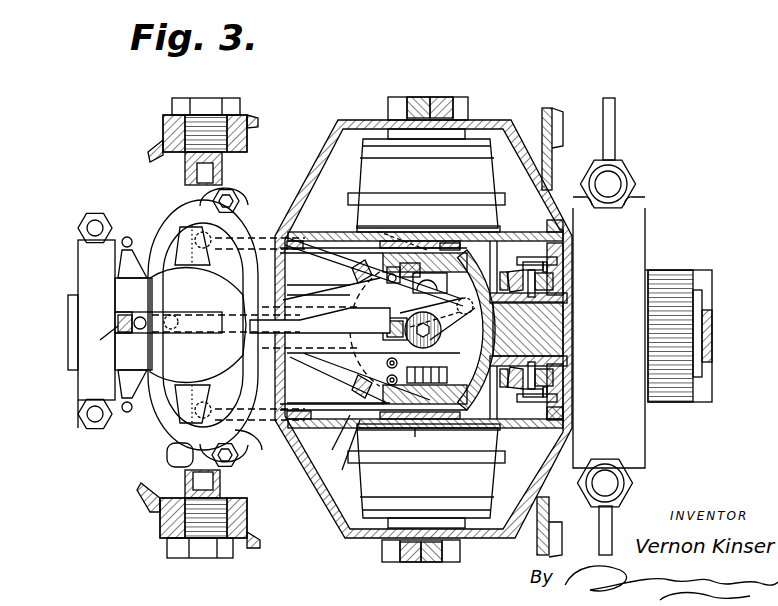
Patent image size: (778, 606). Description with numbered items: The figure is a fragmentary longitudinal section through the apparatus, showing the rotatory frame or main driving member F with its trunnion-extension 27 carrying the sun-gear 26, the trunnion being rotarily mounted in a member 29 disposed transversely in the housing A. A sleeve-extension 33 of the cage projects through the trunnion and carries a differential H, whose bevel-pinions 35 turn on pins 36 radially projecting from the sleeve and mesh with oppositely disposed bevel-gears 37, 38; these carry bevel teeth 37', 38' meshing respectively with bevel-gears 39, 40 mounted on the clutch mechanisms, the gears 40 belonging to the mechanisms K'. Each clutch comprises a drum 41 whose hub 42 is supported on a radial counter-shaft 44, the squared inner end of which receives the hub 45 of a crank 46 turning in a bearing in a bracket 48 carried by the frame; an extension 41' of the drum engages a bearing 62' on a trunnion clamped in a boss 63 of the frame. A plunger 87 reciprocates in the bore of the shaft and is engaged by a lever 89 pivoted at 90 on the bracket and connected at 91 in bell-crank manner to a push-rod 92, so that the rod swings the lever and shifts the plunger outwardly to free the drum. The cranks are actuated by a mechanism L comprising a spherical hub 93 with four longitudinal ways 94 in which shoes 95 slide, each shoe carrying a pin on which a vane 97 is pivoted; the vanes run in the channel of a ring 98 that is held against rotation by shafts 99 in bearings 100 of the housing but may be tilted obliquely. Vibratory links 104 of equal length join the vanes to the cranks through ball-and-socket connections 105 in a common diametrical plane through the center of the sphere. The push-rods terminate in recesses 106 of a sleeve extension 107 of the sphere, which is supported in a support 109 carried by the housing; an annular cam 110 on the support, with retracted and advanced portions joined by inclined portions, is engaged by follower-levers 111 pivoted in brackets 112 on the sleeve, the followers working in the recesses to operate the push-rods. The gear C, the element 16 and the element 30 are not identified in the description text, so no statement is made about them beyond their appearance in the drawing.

The rotatory frame F is at (490, 123).
The boss 63 is at (398, 97).
The bearing 62' is at (426, 329).
The clutch mechanism K' is at (428, 328).
The extension 41' is at (408, 317).
The clutch housing or drum 41 is at (402, 311).
The hub 42 is at (425, 244).
The bracket 48 is at (413, 252).
The ball-and-socket connection 105 is at (449, 243).
The contact block 16 is at (440, 284).
The crank 46 is at (430, 433).
The counter-shaft 44 is at (442, 330).
The hub of crank 45 is at (447, 345).
The push-rod 92 is at (303, 286).
The vibratory link 104 is at (345, 287).
The pivotal connection 91 is at (333, 440).
The pivot 90 is at (342, 452).
The lever 89 is at (427, 250).
The plunger 87 is at (416, 437).
The differential H is at (547, 331).
The bevel-pinions 35 is at (540, 280).
The bevel-gear 37 is at (527, 302).
The bevel teeth 37' is at (524, 288).
The bevel teeth 38' is at (577, 261).
The bevel-gear 38 is at (555, 286).
The bevel-gear 39 is at (552, 405).
The pins 36 is at (545, 267).
The bevel-gear 40 is at (562, 226).
The rod 30 is at (560, 110).
The member 29 is at (645, 203).
The trunnion-extension 27 is at (648, 275).
The clutch C is at (572, 302).
The sun-gear 26 is at (672, 270).
The sleeve-extension 33 is at (702, 293).
The mechanism L is at (158, 210).
The vane 97 is at (190, 240).
The ways 94 is at (196, 340).
The shoe 95 is at (216, 355).
The housing A is at (163, 140).
The bearings 100 is at (222, 167).
The shafts 99 is at (237, 186).
The ring 98 is at (233, 432).
The spherical hub 93 is at (152, 402).
The sleeve extension 107 is at (128, 288).
The follower-levers 111 is at (115, 262).
The support 109 is at (80, 422).
The bracket 112 is at (143, 221).
The recesses 106 is at (133, 330).
The annular cam 110 is at (118, 357).